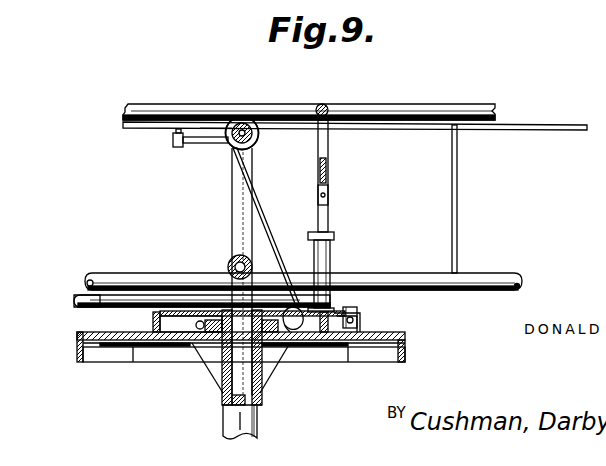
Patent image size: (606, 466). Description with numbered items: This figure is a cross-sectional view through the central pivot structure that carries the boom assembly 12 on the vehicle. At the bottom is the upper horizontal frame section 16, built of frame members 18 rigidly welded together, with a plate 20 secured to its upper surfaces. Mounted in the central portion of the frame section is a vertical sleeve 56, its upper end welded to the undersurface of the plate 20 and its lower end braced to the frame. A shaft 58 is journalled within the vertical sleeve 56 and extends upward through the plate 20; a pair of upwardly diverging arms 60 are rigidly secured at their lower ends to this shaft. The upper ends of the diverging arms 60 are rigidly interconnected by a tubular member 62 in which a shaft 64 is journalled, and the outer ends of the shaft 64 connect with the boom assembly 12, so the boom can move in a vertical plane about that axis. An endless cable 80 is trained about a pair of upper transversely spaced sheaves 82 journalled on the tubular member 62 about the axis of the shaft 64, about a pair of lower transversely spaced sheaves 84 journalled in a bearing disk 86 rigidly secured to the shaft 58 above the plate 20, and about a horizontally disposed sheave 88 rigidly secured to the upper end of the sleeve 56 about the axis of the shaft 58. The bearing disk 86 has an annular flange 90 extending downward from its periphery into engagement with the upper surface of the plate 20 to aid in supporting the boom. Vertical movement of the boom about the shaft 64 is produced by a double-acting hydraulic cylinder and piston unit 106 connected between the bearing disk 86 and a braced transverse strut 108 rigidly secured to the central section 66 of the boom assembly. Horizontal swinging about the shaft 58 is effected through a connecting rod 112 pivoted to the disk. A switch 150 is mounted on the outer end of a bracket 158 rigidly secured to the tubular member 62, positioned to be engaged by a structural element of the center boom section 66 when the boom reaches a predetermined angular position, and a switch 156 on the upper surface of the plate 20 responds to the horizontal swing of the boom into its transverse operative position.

The boom assembly 12 is at (513, 271).
The upper horizontal frame section 16 is at (407, 331).
The frame members 18 is at (405, 351).
The plate 20 is at (108, 316).
The vertical sleeve 56 is at (248, 420).
The shaft 58 is at (247, 371).
The upwardly diverging arms 60 is at (232, 205).
The tubular member 62 is at (226, 137).
The shaft 64 is at (258, 137).
The central section 66 is at (460, 110).
The endless cable 80 is at (263, 213).
The upper transversely spaced sheaves 82 is at (240, 116).
The lower transversely spaced sheaves 84 is at (292, 307).
The bearing disk 86 is at (193, 312).
The horizontally disposed sheave 88 is at (208, 345).
The annular flange 90 is at (153, 323).
The double-acting hydraulic cylinder and piston unit 106 is at (333, 236).
The transverse strut 108 is at (330, 167).
The connecting rod 112 is at (100, 297).
The switch 150 is at (172, 142).
The switch 156 is at (348, 308).
The bracket 158 is at (202, 133).